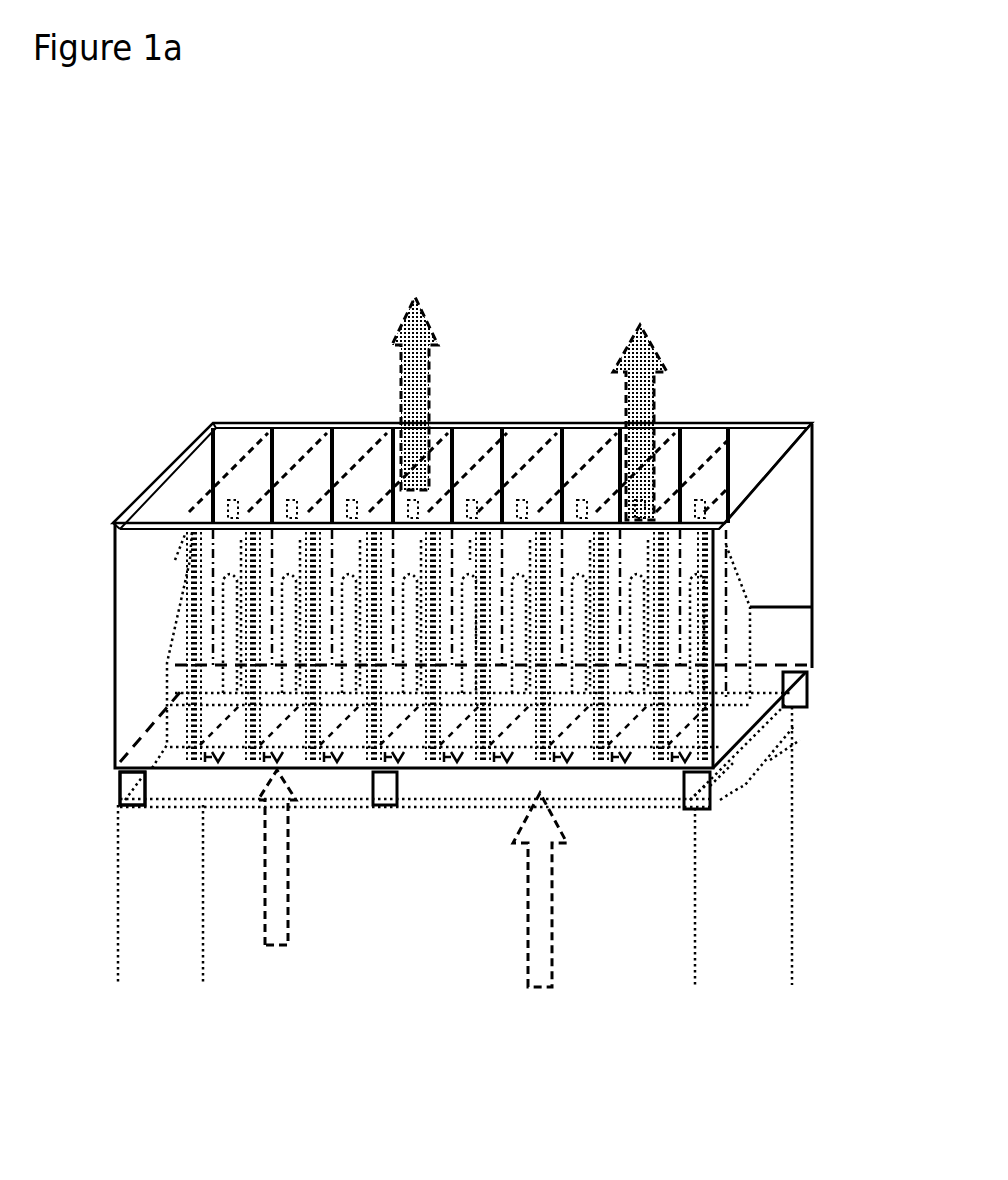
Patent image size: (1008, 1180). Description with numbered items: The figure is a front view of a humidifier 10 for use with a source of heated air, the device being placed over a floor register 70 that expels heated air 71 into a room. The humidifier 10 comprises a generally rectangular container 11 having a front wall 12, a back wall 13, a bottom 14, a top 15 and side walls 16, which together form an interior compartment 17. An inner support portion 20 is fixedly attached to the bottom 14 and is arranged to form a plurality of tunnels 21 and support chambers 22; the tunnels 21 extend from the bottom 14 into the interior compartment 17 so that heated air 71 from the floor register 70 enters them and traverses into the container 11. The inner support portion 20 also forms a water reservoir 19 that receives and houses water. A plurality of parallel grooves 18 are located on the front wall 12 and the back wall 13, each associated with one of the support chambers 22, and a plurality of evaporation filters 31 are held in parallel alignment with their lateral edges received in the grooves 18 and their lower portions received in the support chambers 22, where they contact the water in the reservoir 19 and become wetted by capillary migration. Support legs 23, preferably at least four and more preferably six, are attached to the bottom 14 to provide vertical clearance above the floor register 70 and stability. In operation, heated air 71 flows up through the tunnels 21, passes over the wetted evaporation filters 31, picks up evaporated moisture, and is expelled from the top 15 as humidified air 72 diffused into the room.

The humidifier 10 is at (232, 268).
The container 11 is at (120, 600).
The front wall 12 is at (132, 718).
The back wall 13 is at (797, 480).
The bottom 14 is at (795, 745).
The top 15 is at (747, 423).
The side walls 16 is at (160, 497).
The interior compartment 17 is at (232, 437).
The grooves 18 is at (503, 460).
The water reservoir 19 is at (783, 645).
The inner support portion 20 is at (165, 692).
The tunnels 21 is at (243, 742).
The support chambers 22 is at (812, 607).
The support legs 23 is at (125, 790).
The evaporation filters 31 is at (223, 471).
The floor register 70 is at (720, 788).
The heated air 71 is at (263, 921).
The humidified air 72 is at (400, 376).